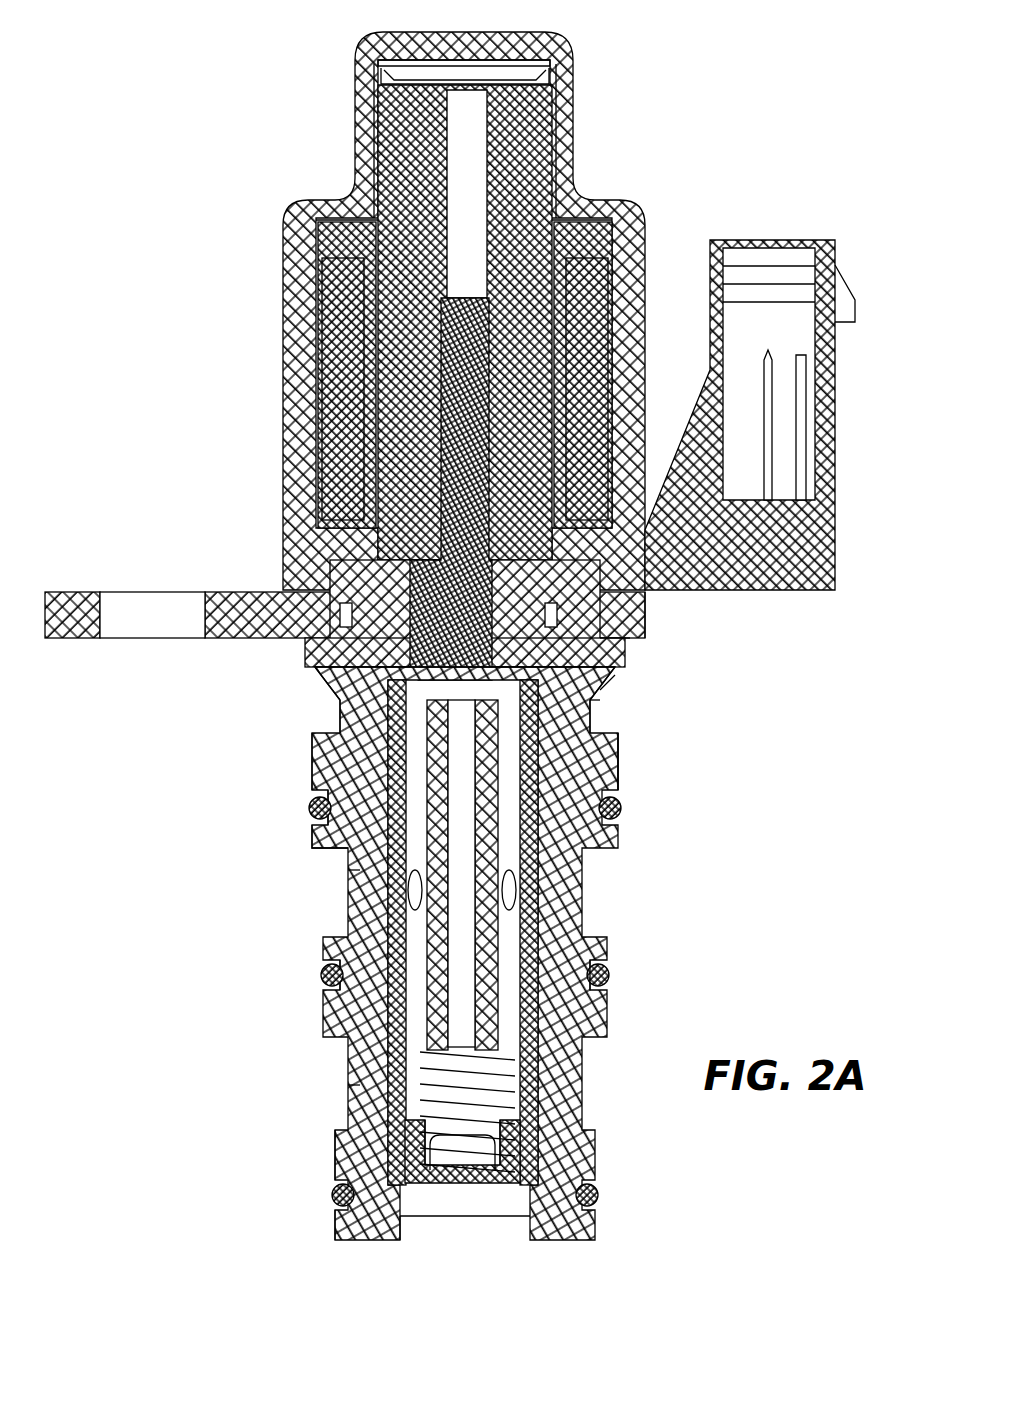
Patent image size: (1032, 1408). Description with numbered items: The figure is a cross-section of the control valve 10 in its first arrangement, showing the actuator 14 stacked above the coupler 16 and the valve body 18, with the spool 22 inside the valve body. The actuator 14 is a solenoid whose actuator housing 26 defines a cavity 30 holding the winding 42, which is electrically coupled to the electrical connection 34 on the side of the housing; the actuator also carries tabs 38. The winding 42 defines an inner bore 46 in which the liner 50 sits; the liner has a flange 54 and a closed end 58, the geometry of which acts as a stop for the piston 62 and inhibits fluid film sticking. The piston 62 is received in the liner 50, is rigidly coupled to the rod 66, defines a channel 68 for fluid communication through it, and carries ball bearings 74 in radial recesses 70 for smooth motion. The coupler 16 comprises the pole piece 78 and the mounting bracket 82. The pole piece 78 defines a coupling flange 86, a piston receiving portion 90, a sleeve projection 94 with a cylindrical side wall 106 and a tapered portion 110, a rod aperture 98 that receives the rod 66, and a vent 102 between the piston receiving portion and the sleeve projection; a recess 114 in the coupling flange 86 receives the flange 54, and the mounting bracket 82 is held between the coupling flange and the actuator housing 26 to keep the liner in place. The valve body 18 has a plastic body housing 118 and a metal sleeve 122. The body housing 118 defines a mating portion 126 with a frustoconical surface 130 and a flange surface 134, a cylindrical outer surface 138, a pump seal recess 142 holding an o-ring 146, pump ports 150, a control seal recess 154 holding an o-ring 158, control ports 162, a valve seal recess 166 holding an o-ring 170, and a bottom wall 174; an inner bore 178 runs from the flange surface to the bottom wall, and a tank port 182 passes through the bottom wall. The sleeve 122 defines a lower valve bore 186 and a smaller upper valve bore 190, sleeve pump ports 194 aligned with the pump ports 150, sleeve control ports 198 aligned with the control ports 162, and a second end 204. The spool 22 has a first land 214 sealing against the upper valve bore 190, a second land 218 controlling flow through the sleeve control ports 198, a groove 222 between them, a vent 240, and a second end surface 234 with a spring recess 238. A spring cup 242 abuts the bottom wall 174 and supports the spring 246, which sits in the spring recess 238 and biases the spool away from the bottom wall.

The control valve 10 is at (471, 655).
The actuator 14 is at (553, 295).
The coupler 16 is at (401, 615).
The valve body 18 is at (418, 989).
The spool 22 is at (580, 920).
The actuator housing 26 is at (565, 140).
The cavity 30 is at (553, 85).
The electrical connection 34 is at (770, 400).
The tabs 38 is at (330, 690).
The winding 42 is at (345, 365).
The inner bore 46 is at (380, 405).
The liner 50 is at (372, 80).
The flange 54 is at (655, 640).
The closed end 58 is at (490, 66).
The piston 62 is at (400, 155).
The rod 66 is at (465, 460).
The channel 68 is at (345, 188).
The recesses 70 is at (570, 100).
The ball bearings 74 is at (570, 176).
The pole piece 78 is at (605, 692).
The mounting bracket 82 is at (75, 600).
The coupling flange 86 is at (620, 650).
The piston receiving portion 90 is at (455, 585).
The sleeve projection 94 is at (608, 722).
The rod aperture 98 is at (470, 520).
The vent 102 is at (647, 612).
The side wall 106 is at (345, 705).
The tapered portion 110 is at (330, 760).
The recess 114 is at (350, 630).
The body housing 118 is at (410, 1045).
The sleeve 122 is at (390, 1140).
The mating portion 126 is at (230, 728).
The frustoconical surface 130 is at (612, 682).
The flange surface 134 is at (310, 645).
The outer surface 138 is at (325, 842).
The pump seal recess 142 is at (335, 827).
The o-ring 146 is at (308, 806).
The pump ports 150 is at (360, 880).
The control seal recess 154 is at (330, 987).
The o-ring 158 is at (320, 975).
The control ports 162 is at (348, 1080).
The valve seal recess 166 is at (338, 1220).
The o-ring 170 is at (332, 1198).
The bottom wall 174 is at (430, 1217).
The inner bore 178 is at (392, 1010).
The tank port 182 is at (490, 1230).
The lower valve bore 186 is at (608, 980).
The upper valve bore 190 is at (550, 880).
The sleeve pump ports 194 is at (405, 895).
The sleeve control ports 198 is at (410, 1115).
The second end 204 is at (398, 1218).
The first land 214 is at (618, 752).
The second land 218 is at (520, 1047).
The groove 222 is at (575, 1010).
The second end surface 234 is at (500, 1092).
The spring recess 238 is at (565, 1118).
The vent 240 is at (622, 808).
The spring cup 242 is at (598, 1192).
The spring 246 is at (520, 1142).